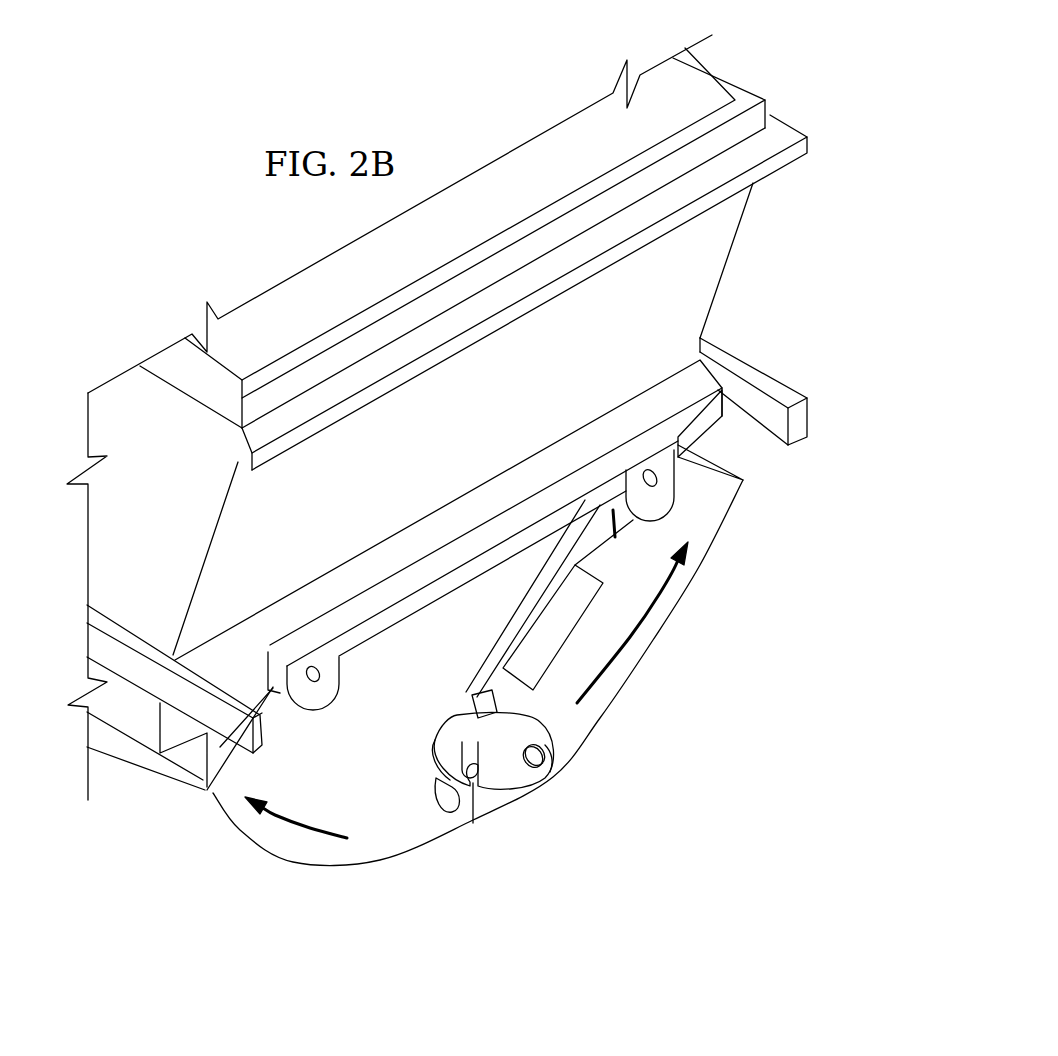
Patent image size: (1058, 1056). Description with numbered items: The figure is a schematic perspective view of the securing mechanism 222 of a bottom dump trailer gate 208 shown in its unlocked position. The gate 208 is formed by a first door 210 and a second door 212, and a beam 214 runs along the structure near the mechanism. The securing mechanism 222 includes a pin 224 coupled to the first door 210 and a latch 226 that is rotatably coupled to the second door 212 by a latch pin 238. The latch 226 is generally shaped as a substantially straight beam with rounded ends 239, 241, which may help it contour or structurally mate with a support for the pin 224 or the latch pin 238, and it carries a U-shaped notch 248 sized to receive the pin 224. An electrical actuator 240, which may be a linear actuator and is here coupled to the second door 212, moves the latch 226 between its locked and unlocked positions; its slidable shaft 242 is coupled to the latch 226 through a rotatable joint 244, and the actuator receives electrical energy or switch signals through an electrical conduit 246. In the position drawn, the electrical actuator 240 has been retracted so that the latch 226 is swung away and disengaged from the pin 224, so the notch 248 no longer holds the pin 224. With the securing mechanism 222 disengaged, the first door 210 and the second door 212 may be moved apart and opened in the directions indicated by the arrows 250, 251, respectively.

The gate 208 is at (508, 655).
The first door 210 is at (167, 790).
The second door 212 is at (723, 517).
The beam 214 is at (483, 537).
The securing mechanism 222 is at (492, 800).
The pin 224 is at (433, 810).
The latch 226 is at (495, 793).
The latch pin 238 is at (550, 758).
The rounded end 239 is at (433, 747).
The electrical actuator 240 is at (578, 608).
The rounded end 241 is at (557, 745).
The slidable shaft 242 is at (513, 690).
The rotatable joint 244 is at (473, 697).
The electrical conduit 246 is at (615, 538).
The notch 248 is at (430, 793).
The arrow 250 is at (293, 833).
The arrow 251 is at (660, 597).